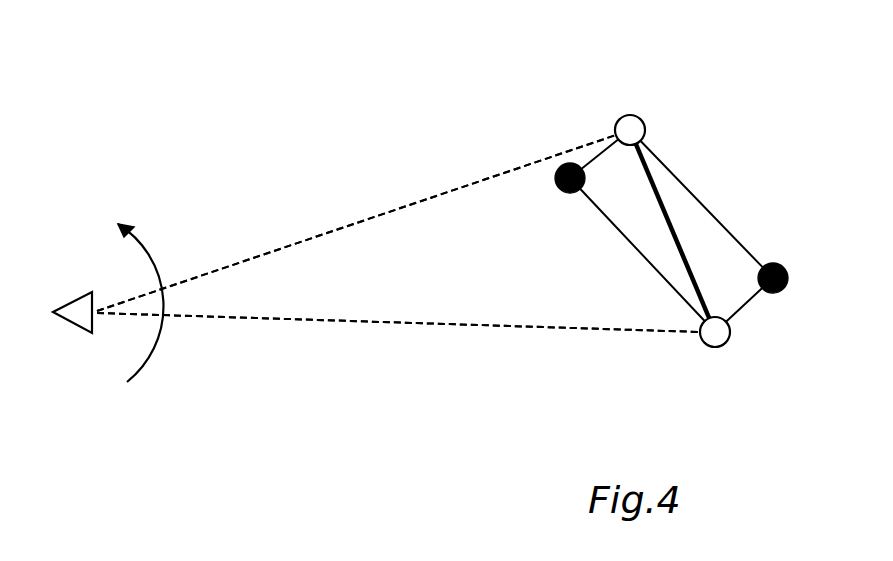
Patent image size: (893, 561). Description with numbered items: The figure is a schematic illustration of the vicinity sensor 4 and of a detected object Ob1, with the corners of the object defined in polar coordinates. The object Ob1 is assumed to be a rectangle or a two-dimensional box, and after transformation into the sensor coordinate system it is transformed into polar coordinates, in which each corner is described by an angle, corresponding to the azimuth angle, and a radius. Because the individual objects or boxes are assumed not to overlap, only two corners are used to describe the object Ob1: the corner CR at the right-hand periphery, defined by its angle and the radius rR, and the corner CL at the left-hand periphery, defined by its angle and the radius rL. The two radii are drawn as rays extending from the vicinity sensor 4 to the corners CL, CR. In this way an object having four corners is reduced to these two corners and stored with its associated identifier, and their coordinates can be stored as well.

The vicinity sensor 4 is at (80, 307).
The radius rL is at (480, 180).
The radius rR is at (473, 325).
The object Ob1 is at (695, 222).
The corner at the left-hand periphery CL is at (638, 118).
The corner at the right-hand periphery CR is at (717, 335).